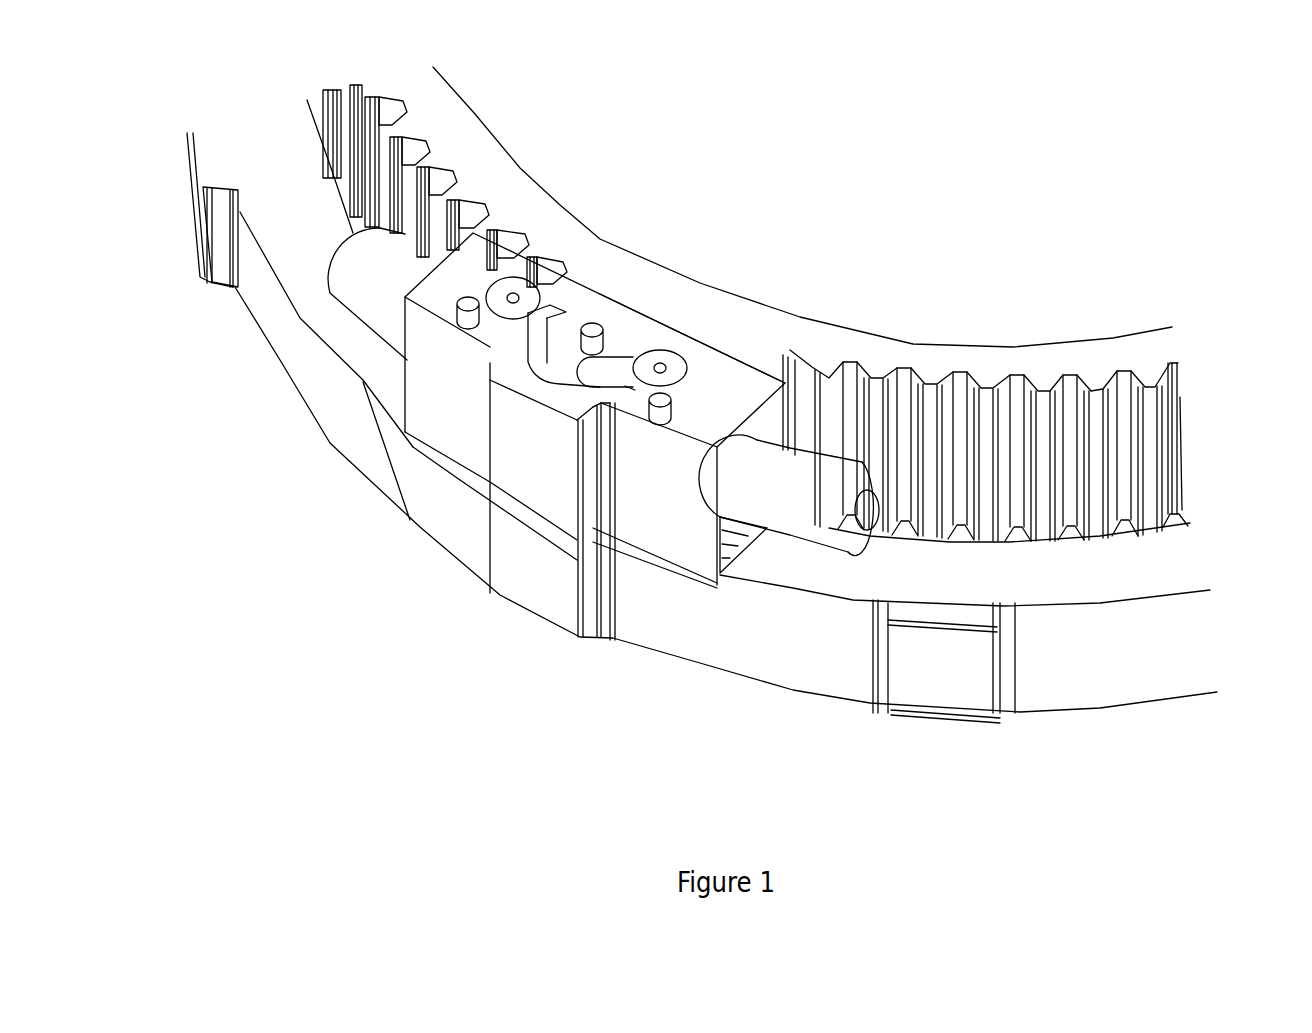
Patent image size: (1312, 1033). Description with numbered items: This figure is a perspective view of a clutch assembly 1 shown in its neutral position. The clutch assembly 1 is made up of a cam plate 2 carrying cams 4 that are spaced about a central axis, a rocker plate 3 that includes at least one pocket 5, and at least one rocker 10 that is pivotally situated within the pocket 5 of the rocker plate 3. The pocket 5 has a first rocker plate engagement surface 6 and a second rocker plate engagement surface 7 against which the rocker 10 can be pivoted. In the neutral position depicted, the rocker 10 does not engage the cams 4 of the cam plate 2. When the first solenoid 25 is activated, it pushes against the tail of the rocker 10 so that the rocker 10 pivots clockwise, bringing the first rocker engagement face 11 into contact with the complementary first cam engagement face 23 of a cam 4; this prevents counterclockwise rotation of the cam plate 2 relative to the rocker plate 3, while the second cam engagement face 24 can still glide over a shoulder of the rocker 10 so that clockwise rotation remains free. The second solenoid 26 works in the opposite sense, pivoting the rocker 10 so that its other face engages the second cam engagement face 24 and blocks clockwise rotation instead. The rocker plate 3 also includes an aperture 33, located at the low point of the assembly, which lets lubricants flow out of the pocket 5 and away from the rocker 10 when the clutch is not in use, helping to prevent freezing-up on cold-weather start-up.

The clutch assembly 1 is at (702, 395).
The cam plate 2 is at (990, 382).
The rocker plate 3 is at (513, 409).
The cams 4 is at (755, 313).
The pocket 5 is at (703, 624).
The first rocker plate engagement surface 6 is at (421, 387).
The second rocker plate engagement surface 7 is at (722, 578).
The rocker 10 is at (629, 309).
The first rocker engagement face 11 is at (636, 193).
The first cam engagement face 23 is at (638, 188).
The second cam engagement face 24 is at (720, 251).
The first solenoid 25 is at (848, 366).
The second solenoid 26 is at (465, 206).
The aperture 33 is at (441, 513).